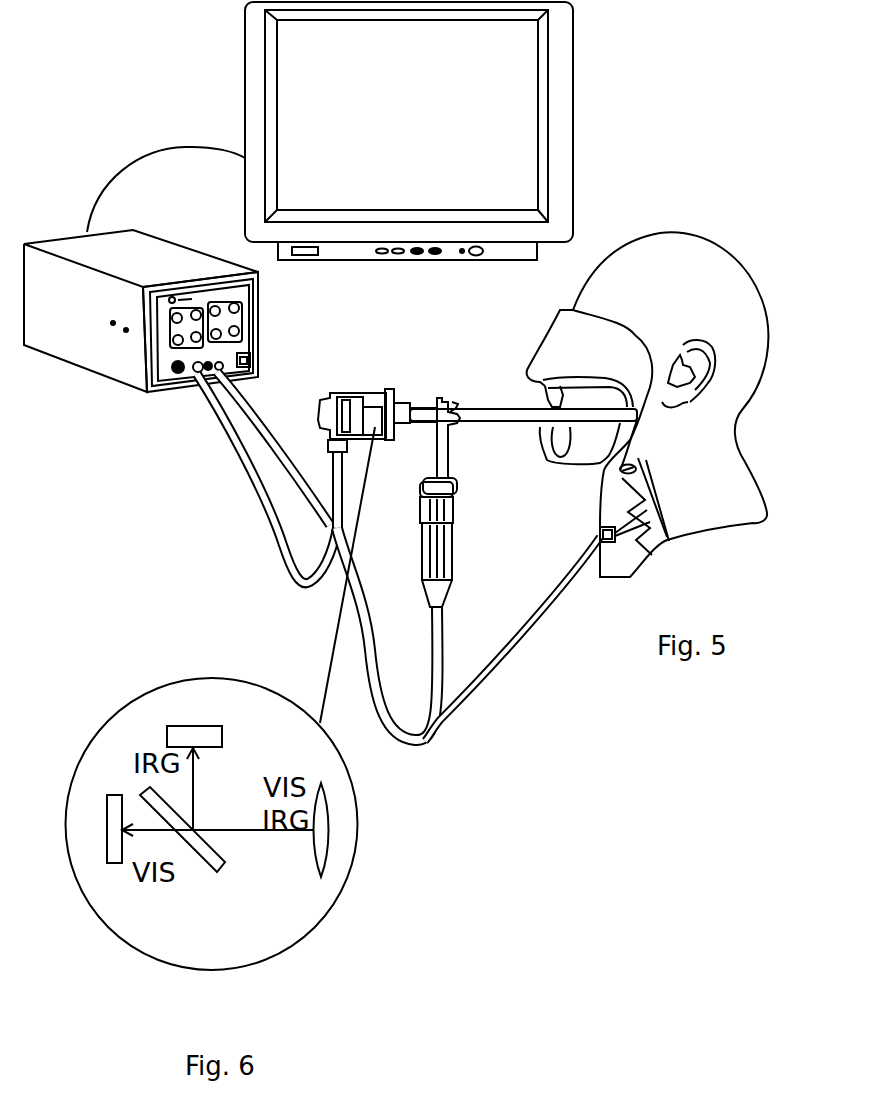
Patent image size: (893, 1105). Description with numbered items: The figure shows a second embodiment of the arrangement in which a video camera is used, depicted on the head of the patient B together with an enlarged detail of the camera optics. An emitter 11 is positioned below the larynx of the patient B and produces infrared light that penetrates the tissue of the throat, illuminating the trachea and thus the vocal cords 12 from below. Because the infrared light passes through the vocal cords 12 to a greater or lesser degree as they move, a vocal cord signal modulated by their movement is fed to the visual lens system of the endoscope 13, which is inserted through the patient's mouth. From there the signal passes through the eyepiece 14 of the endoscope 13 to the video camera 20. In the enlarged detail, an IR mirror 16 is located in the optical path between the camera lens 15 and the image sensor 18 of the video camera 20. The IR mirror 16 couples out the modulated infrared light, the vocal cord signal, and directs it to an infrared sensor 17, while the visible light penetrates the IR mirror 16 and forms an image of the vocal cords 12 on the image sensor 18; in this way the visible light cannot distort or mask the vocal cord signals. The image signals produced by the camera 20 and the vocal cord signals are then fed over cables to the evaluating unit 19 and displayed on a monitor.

In FIG. 5, the emitter 11 is at (600, 535).
In FIG. 5, the vocal cords 12 is at (637, 467).
In FIG. 5, the endoscope 13 is at (443, 408).
In FIG. 5, the eyepiece 14 is at (400, 403).
In FIG. 6, the camera lens 15 is at (322, 847).
In FIG. 6, the IR mirror 16 is at (217, 870).
In FIG. 6, the infrared sensor 17 is at (183, 733).
In FIG. 6, the image sensor 18 is at (113, 808).
In FIG. 5, the evaluating unit 19 is at (93, 348).
In FIG. 5, the video camera 20 is at (337, 393).
In FIG. 5, the patient B is at (728, 250).